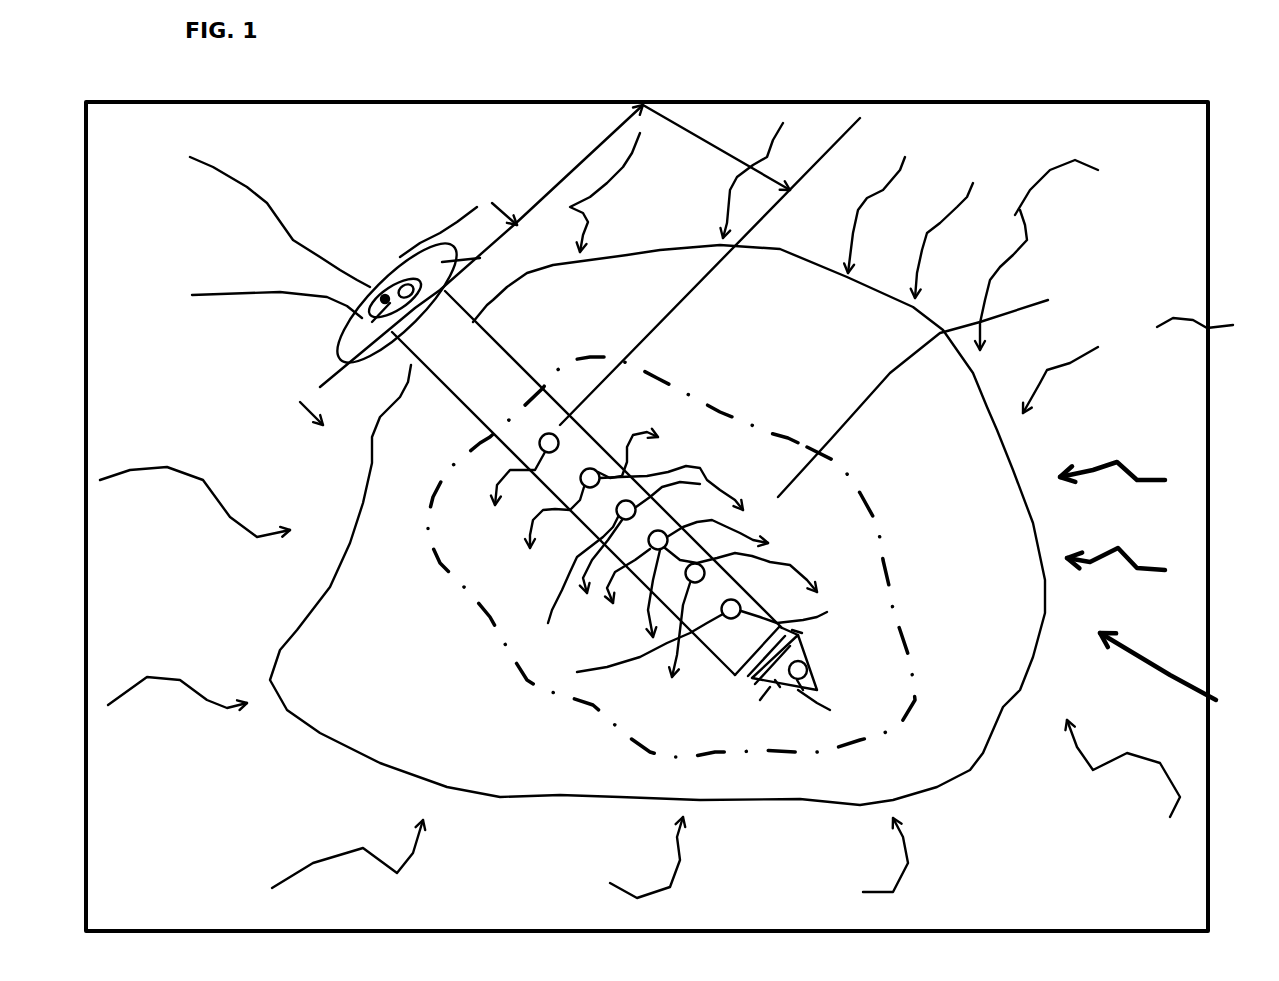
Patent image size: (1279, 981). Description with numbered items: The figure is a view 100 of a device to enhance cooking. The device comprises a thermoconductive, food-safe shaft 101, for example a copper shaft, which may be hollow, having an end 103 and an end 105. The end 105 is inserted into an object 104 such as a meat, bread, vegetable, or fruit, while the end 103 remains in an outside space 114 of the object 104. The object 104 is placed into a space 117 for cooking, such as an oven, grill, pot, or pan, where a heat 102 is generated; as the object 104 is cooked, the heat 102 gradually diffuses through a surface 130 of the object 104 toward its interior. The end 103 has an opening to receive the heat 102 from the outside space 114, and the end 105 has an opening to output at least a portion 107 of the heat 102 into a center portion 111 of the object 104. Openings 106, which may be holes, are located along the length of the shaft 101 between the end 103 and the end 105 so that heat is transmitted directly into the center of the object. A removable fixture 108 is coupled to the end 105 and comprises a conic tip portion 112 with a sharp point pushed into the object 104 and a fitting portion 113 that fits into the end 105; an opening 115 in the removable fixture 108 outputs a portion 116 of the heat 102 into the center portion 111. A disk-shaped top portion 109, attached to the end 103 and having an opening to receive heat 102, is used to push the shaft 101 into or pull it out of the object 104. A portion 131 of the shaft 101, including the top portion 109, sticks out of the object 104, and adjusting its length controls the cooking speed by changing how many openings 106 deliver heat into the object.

The view 100 is at (1171, 194).
The shaft 101 is at (467, 418).
The heat 102 is at (397, 283).
The end 103 is at (452, 232).
The object 104 is at (946, 602).
The end 105 is at (759, 578).
The openings 106 is at (560, 437).
The portion of the heat 107 is at (600, 418).
The removable fixture 108 is at (808, 672).
The top portion 109 is at (566, 192).
The center portion 111 is at (930, 386).
The tip portion 112 is at (797, 692).
The fitting portion 113 is at (802, 633).
The outside space 114 is at (617, 336).
The opening 115 is at (803, 690).
The portion of the heat 116 is at (780, 687).
The space 117 is at (1206, 310).
The surface 130 is at (290, 645).
The portion of the shaft 131 is at (700, 128).